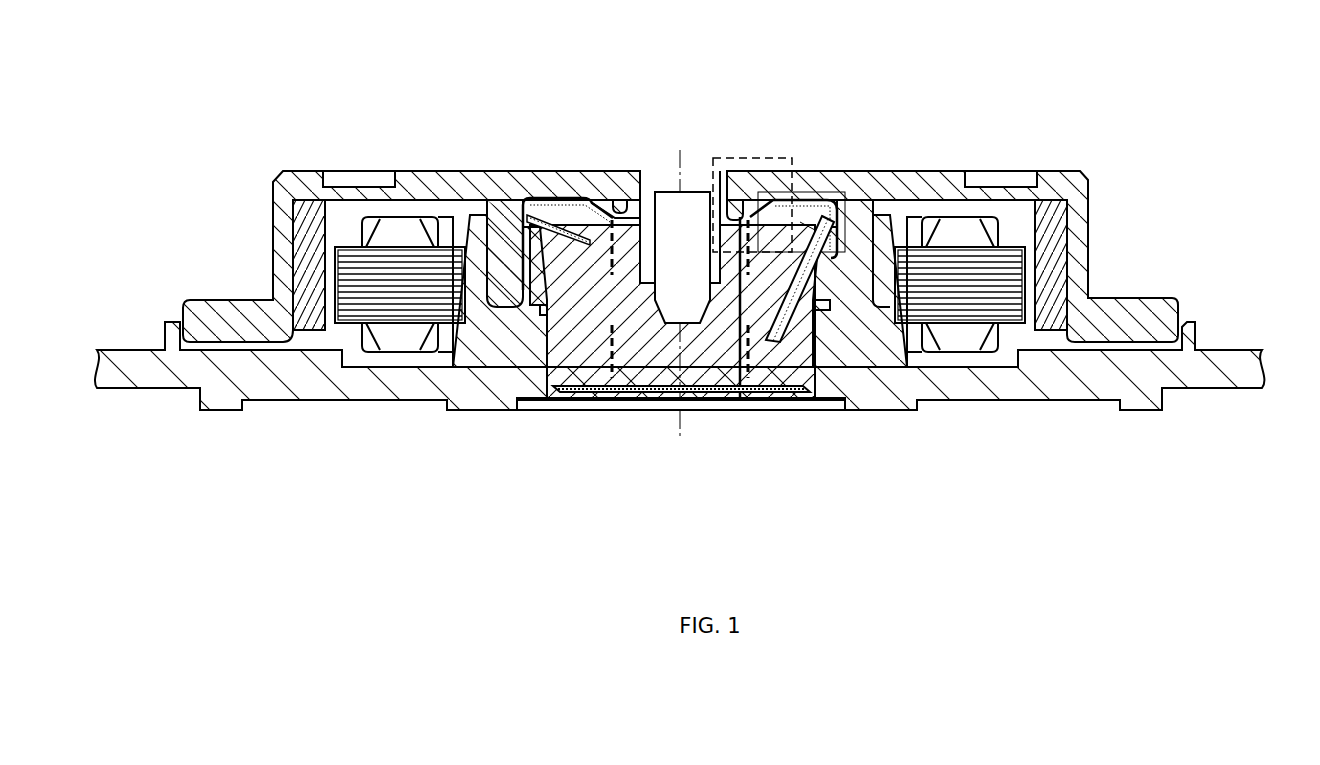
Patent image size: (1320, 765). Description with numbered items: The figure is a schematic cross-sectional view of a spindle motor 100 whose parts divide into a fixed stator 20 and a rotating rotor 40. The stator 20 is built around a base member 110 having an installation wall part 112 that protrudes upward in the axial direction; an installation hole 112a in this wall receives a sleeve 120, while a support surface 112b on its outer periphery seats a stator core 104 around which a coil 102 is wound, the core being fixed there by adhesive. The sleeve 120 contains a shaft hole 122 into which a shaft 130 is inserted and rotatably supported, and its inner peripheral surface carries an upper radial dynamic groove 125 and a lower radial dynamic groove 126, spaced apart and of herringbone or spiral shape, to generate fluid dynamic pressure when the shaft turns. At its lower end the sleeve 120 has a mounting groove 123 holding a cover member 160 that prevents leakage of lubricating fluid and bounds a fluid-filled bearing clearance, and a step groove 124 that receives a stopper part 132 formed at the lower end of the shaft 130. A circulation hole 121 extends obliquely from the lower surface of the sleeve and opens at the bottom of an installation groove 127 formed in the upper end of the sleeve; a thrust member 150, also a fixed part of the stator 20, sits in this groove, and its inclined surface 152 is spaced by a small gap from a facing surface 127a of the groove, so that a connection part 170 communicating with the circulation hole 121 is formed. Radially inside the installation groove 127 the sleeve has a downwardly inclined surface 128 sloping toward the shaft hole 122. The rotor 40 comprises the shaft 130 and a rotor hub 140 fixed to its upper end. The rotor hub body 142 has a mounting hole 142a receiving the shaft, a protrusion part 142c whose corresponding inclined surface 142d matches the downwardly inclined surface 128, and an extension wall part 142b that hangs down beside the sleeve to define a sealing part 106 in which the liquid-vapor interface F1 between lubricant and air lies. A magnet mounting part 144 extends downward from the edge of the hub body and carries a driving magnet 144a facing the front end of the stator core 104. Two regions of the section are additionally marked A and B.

The spindle motor 100 is at (695, 42).
The stator 20 is at (1200, 422).
The rotor 40 is at (262, 153).
The base member 110 is at (1058, 387).
The installation wall part 112 is at (875, 340).
The installation hole 112a is at (820, 345).
The support surface 112b is at (895, 330).
The coil 102 is at (963, 347).
The stator core 104 is at (1005, 295).
The sealing part 106 is at (485, 330).
The sleeve 120 is at (575, 370).
The circulation hole 121 is at (790, 360).
The shaft hole 122 is at (640, 340).
The mounting groove 123 is at (548, 385).
The step groove 124 is at (600, 385).
The upper radial dynamic groove 125 is at (620, 215).
The lower radial dynamic groove 126 is at (758, 370).
The installation groove 127 is at (572, 205).
The facing surface 127a is at (567, 223).
The downwardly inclined surface 128 is at (636, 210).
The shaft 130 is at (690, 310).
The stopper part 132 is at (735, 330).
The rotor hub 140 is at (1130, 68).
The rotor hub body 142 is at (925, 190).
The mounting hole 142a is at (722, 235).
The extension wall part 142b is at (503, 277).
The protrusion part 142c is at (745, 215).
The corresponding inclined surface 142d is at (800, 215).
The magnet mounting part 144 is at (1055, 258).
The driving magnet 144a is at (305, 252).
The thrust member 150 is at (555, 225).
The inclined surface 152 is at (822, 240).
The cover member 160 is at (690, 392).
The connection part 170 is at (540, 320).
The region A is at (810, 225).
The region B is at (750, 157).
The liquid-vapor interface F1 is at (498, 270).